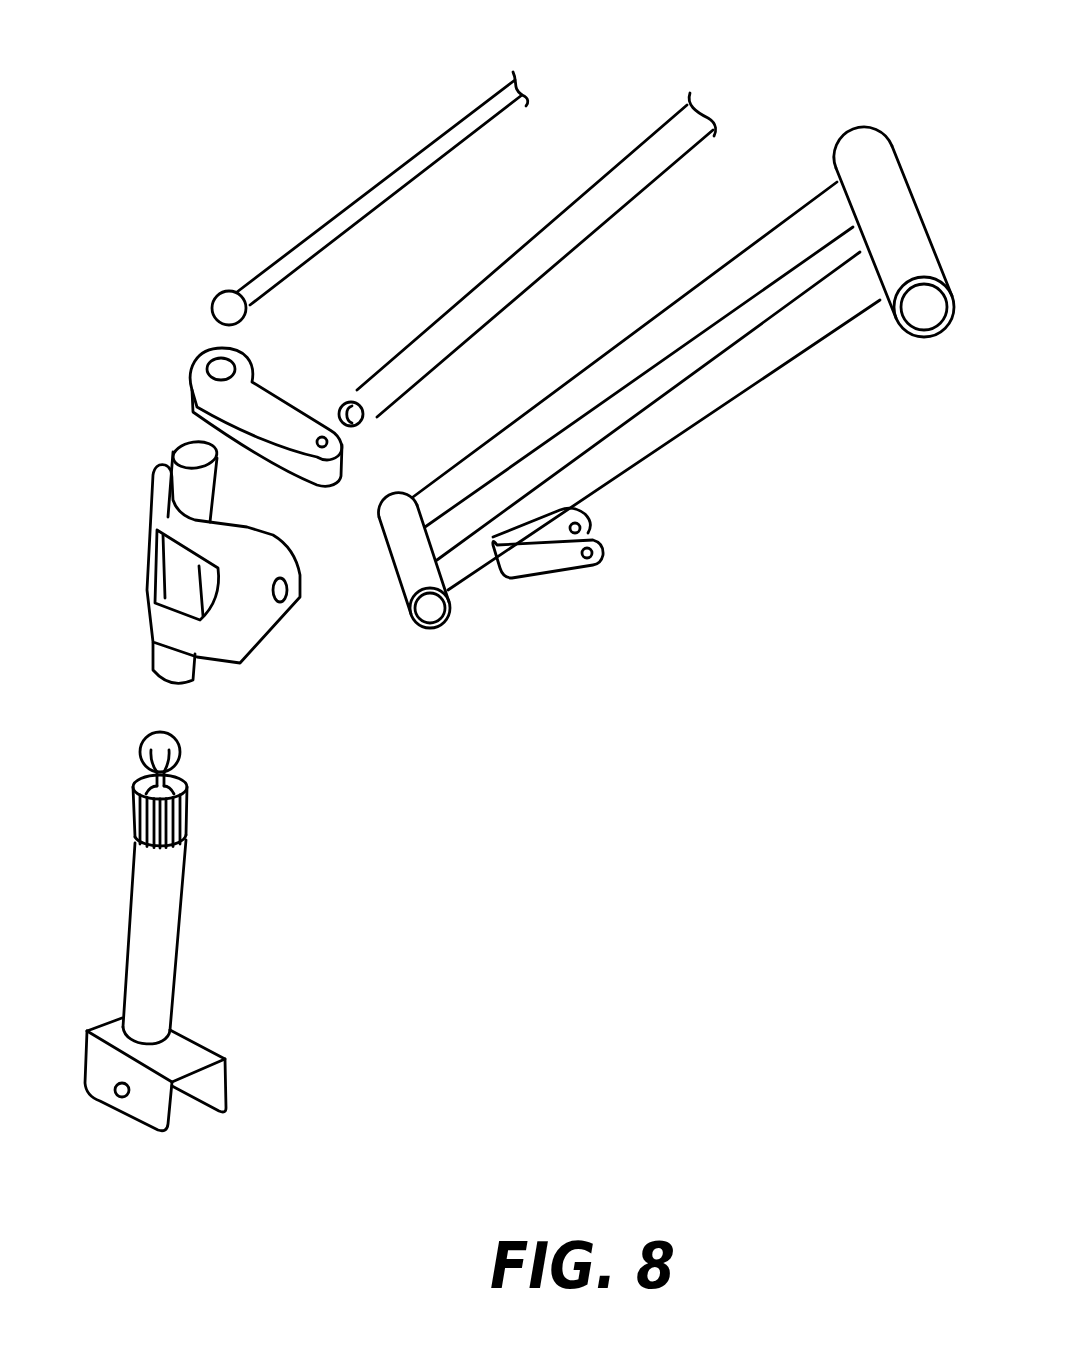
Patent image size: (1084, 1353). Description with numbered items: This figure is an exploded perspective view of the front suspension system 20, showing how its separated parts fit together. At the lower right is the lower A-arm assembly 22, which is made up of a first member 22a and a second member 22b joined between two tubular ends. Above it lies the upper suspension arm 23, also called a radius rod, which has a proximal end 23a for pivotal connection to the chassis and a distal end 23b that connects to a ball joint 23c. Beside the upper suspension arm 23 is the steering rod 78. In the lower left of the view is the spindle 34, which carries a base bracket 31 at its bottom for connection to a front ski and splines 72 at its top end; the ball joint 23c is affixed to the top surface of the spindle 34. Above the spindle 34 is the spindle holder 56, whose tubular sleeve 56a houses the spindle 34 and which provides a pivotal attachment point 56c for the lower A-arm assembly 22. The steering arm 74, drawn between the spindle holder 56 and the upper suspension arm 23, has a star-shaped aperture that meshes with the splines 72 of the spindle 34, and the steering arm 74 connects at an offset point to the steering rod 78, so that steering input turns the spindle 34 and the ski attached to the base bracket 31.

The front suspension system 20 is at (615, 789).
The lower A-arm assembly 22 is at (721, 454).
The first member 22a is at (738, 255).
The second member 22b is at (826, 333).
The upper suspension arm 23 is at (368, 192).
The proximal end 23a is at (518, 78).
The distal end 23b is at (225, 293).
The ball joint 23c is at (142, 752).
The base bracket 31 is at (192, 1037).
The spindle 34 is at (160, 953).
The spindle holder 56 is at (267, 647).
The tubular sleeve 56a is at (153, 668).
The pivotal attachment point 56c is at (290, 597).
The splines 72 is at (190, 815).
The steering arm 74 is at (187, 400).
The steering rod 78 is at (582, 198).